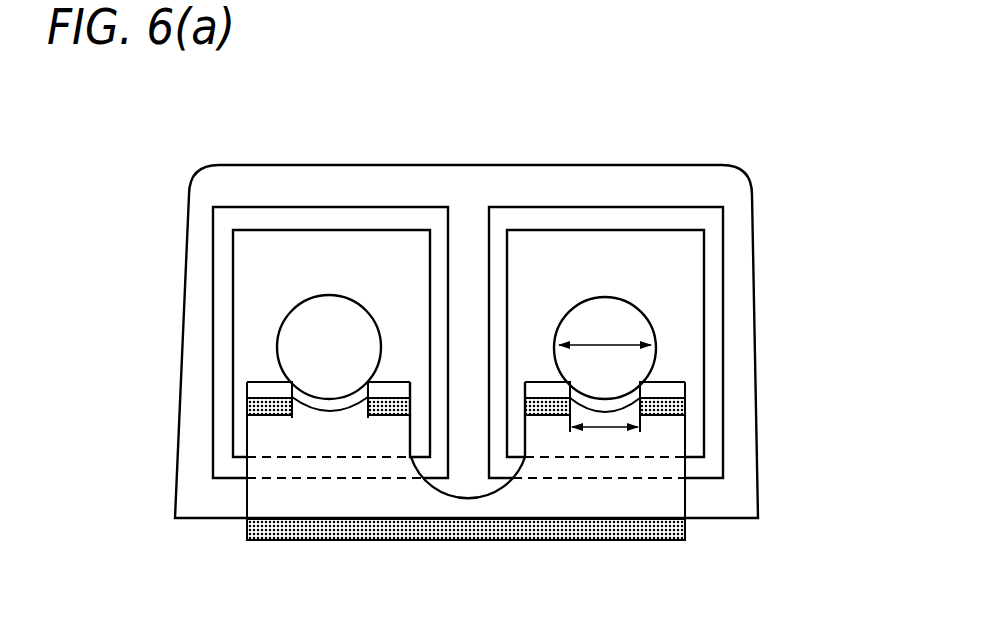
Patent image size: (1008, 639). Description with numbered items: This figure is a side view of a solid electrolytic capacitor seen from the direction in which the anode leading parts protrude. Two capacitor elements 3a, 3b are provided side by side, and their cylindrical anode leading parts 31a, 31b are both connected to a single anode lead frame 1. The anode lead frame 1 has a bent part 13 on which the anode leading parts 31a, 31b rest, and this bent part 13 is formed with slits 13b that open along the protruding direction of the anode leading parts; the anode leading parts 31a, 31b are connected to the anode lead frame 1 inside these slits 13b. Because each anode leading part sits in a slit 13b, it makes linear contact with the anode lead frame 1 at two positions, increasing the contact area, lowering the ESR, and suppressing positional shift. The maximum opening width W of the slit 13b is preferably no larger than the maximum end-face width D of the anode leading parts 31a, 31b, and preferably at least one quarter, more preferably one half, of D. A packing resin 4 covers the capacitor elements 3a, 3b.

The anode lead frame 1 is at (660, 450).
The capacitor element 3a is at (351, 207).
The capacitor element 3b is at (533, 207).
The packing resin 4 is at (747, 407).
The bent part 13 is at (678, 391).
The slit 13b is at (328, 416).
The anode leading part 31a is at (303, 353).
The anode leading part 31b is at (630, 365).